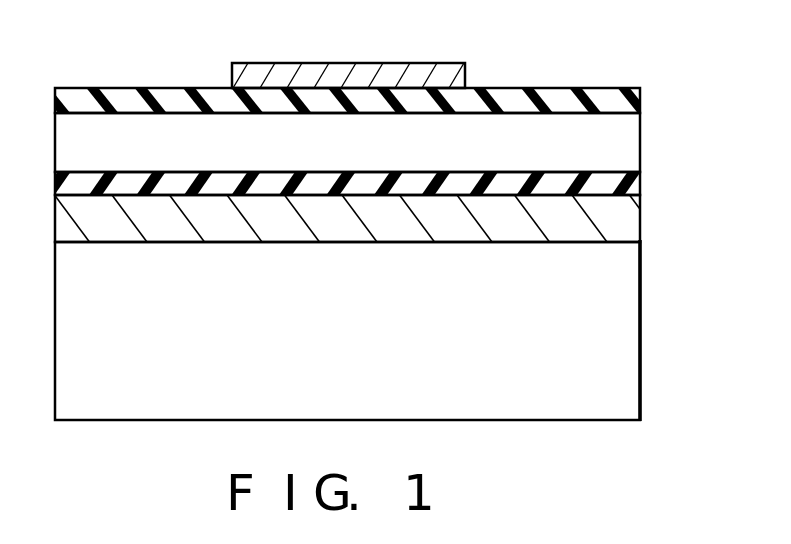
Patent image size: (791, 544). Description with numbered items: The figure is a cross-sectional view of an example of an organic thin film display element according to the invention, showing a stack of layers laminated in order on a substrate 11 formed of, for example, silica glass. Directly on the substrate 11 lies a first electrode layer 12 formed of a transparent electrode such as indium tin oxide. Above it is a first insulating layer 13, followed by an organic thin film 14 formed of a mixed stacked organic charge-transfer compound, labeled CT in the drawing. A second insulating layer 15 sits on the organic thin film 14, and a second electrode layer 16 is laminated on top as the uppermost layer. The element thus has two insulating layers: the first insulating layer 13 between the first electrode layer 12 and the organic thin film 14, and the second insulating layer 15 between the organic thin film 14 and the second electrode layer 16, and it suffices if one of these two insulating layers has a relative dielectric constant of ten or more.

The substrate 11 is at (630, 362).
The first electrode layer 12 is at (628, 222).
The first insulating layer 13 is at (640, 181).
The organic thin film 14 is at (630, 145).
The second insulating layer 15 is at (630, 100).
The second electrode layer 16 is at (405, 72).